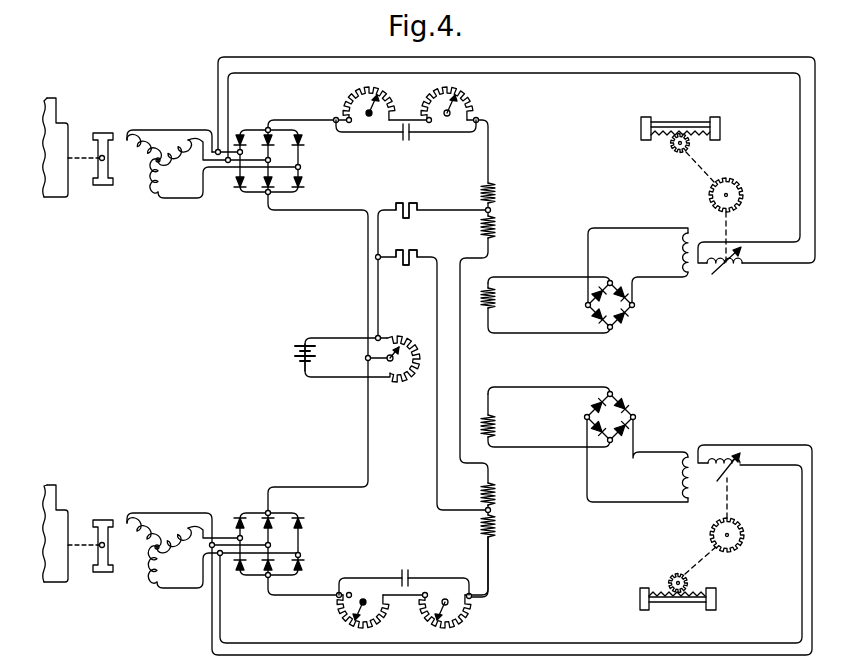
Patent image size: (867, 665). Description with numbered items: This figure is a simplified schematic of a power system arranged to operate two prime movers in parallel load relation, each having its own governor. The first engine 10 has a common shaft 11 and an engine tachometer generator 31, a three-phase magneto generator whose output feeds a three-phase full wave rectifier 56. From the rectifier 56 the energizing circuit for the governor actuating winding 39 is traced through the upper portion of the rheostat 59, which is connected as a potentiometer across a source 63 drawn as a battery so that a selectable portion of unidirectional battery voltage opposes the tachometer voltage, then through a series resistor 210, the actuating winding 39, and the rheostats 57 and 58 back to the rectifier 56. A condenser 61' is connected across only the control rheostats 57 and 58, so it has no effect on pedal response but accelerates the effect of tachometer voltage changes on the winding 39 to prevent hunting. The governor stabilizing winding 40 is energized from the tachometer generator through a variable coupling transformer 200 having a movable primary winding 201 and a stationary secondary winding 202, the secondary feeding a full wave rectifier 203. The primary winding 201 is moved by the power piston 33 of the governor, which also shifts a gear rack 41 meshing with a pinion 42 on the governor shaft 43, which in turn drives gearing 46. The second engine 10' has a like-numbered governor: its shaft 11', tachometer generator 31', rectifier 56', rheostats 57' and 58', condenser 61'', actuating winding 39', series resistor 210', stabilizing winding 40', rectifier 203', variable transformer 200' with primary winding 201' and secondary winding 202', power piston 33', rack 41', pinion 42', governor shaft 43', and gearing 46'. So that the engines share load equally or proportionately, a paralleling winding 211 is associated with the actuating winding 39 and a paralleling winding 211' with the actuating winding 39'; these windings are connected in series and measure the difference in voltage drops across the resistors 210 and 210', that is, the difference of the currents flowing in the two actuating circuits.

The prime mover 10 is at (65, 146).
The common shaft 11 is at (83, 146).
The tachometer generator 31 is at (110, 149).
The three-phase full wave rectifier 56 is at (269, 161).
The rheostat 57 is at (378, 99).
The rheostat 58 is at (459, 99).
The condenser 61' is at (406, 139).
The actuating winding 39 is at (496, 180).
The paralleling winding 211 is at (505, 220).
The series resistor 210 is at (411, 195).
The series resistor 210' is at (403, 245).
The stabilizing winding 40 is at (503, 294).
The battery 63 is at (294, 356).
The rheostat 59 is at (401, 386).
The full wave rectifier 203 is at (614, 320).
The secondary winding 202 is at (668, 252).
The primary winding 201 is at (748, 270).
The variable coupling transformer 200 is at (717, 274).
The gearing 46 is at (740, 220).
The pinion 42 is at (677, 157).
The governor shaft 43 is at (710, 165).
The gear rack 41 is at (680, 116).
The power piston 33 is at (666, 128).
The second engine 10' is at (67, 532).
The common shaft 11' is at (83, 533).
The tachometer generator 31' is at (112, 536).
The full wave rectifier 56' is at (269, 544).
The rheostat 57' is at (376, 617).
The rheostat 58' is at (457, 616).
The condenser 61'' is at (404, 567).
The actuating winding 39' is at (502, 519).
The paralleling winding 211' is at (505, 481).
The stabilizing winding 40' is at (502, 417).
The full wave rectifier 203' is at (617, 404).
The secondary winding 202' is at (666, 477).
The primary winding 201' is at (749, 472).
The variable coupling transformer 200' is at (709, 452).
The gearing 46' is at (742, 515).
The pinion 42' is at (674, 573).
The governor shaft 43' is at (705, 565).
The gear rack 41' is at (677, 611).
The power piston 33' is at (664, 599).